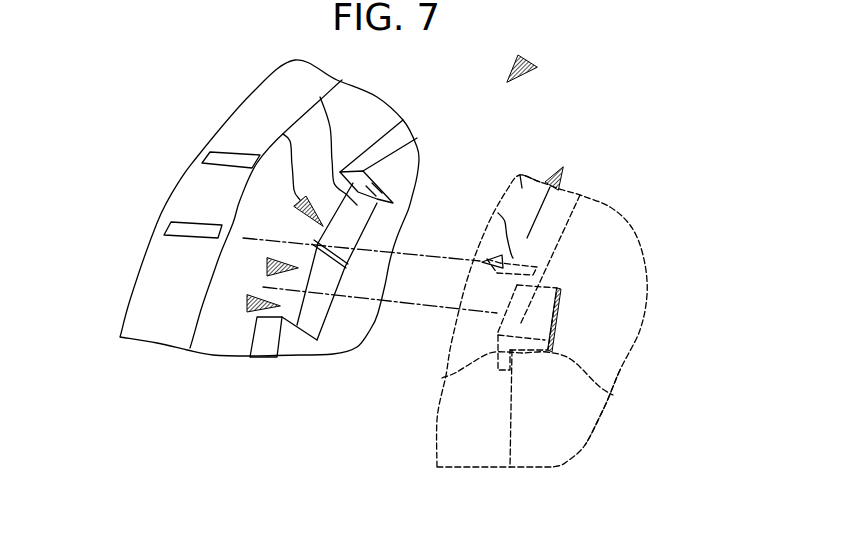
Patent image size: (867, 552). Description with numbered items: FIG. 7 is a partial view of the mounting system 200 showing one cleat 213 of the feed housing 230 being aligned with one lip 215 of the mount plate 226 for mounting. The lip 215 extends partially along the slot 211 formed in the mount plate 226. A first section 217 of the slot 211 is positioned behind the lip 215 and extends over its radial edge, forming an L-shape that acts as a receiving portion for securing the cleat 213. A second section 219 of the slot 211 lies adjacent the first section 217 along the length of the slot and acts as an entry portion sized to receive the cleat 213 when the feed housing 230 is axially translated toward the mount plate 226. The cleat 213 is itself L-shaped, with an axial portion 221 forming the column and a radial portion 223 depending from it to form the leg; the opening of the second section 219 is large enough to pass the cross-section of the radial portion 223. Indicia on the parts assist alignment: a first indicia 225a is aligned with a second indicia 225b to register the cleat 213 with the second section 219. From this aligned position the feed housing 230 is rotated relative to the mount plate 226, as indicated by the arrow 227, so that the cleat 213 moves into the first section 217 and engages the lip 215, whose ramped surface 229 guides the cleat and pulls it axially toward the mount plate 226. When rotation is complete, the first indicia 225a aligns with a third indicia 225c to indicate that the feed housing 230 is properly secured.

The mounting system 200 is at (527, 60).
The slot 211 is at (247, 303).
The cleat 213 is at (610, 392).
The lip 215 is at (390, 222).
The first section 217 is at (283, 134).
The second section 219 is at (267, 267).
The axial portion 221 is at (567, 285).
The radial portion 223 is at (442, 378).
The first indicia 225a is at (498, 213).
The second indicia 225b is at (165, 228).
The third indicia 225c is at (197, 160).
The mount plate 226 is at (250, 92).
The arrow 227 is at (545, 200).
The ramped surface 229 is at (320, 99).
The feed housing 230 is at (640, 242).